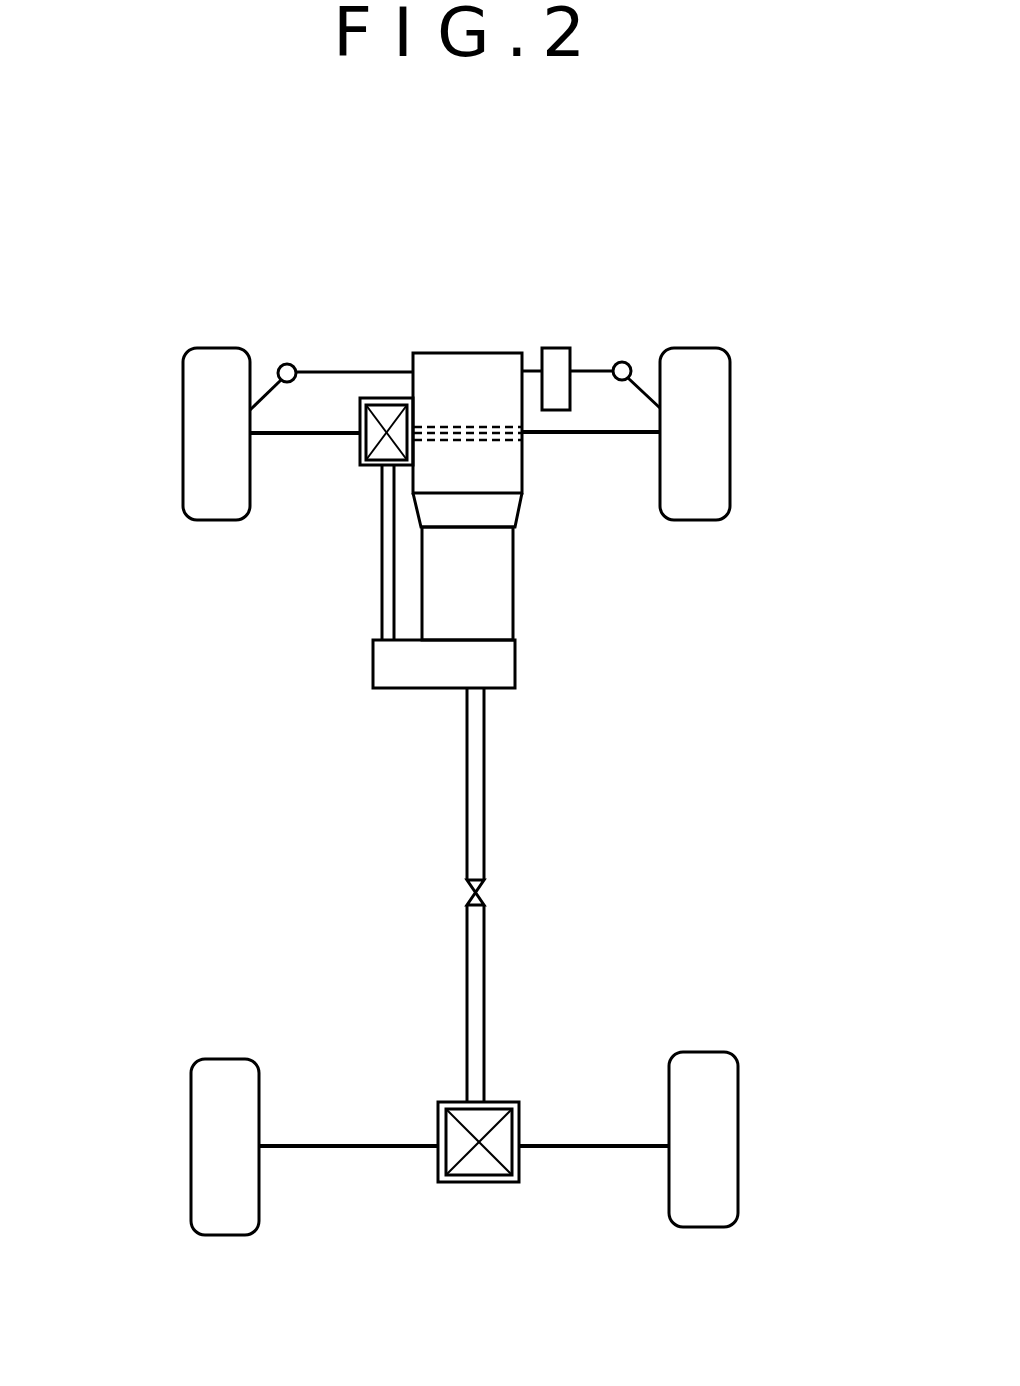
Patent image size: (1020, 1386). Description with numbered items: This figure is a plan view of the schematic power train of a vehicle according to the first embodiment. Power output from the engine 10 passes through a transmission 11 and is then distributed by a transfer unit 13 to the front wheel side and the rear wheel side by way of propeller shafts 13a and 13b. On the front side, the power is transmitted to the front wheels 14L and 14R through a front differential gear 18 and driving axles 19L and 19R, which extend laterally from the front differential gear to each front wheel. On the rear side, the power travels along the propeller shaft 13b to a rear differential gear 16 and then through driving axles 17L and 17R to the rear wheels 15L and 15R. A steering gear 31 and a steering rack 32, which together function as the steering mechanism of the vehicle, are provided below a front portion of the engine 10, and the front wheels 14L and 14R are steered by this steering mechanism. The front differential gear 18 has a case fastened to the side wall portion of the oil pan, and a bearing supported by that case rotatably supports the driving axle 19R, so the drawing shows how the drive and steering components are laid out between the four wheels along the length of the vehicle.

The engine 10 is at (485, 353).
The transmission 11 is at (515, 578).
The transfer unit 13 is at (515, 666).
The propeller shaft 13a is at (382, 592).
The propeller shaft 13b is at (484, 822).
The front wheel 14L is at (183, 392).
The front wheel 14R is at (730, 386).
The rear wheel 15L is at (191, 1130).
The rear wheel 15R is at (738, 1112).
The rear differential gear 16 is at (497, 1102).
The driving axle 17L is at (350, 1146).
The driving axle 17R is at (593, 1146).
The front differential gear 18 is at (360, 452).
The driving axle 19L is at (290, 436).
The driving axle 19R is at (586, 435).
The steering gear 31 is at (556, 348).
The steering rack 32 is at (339, 370).